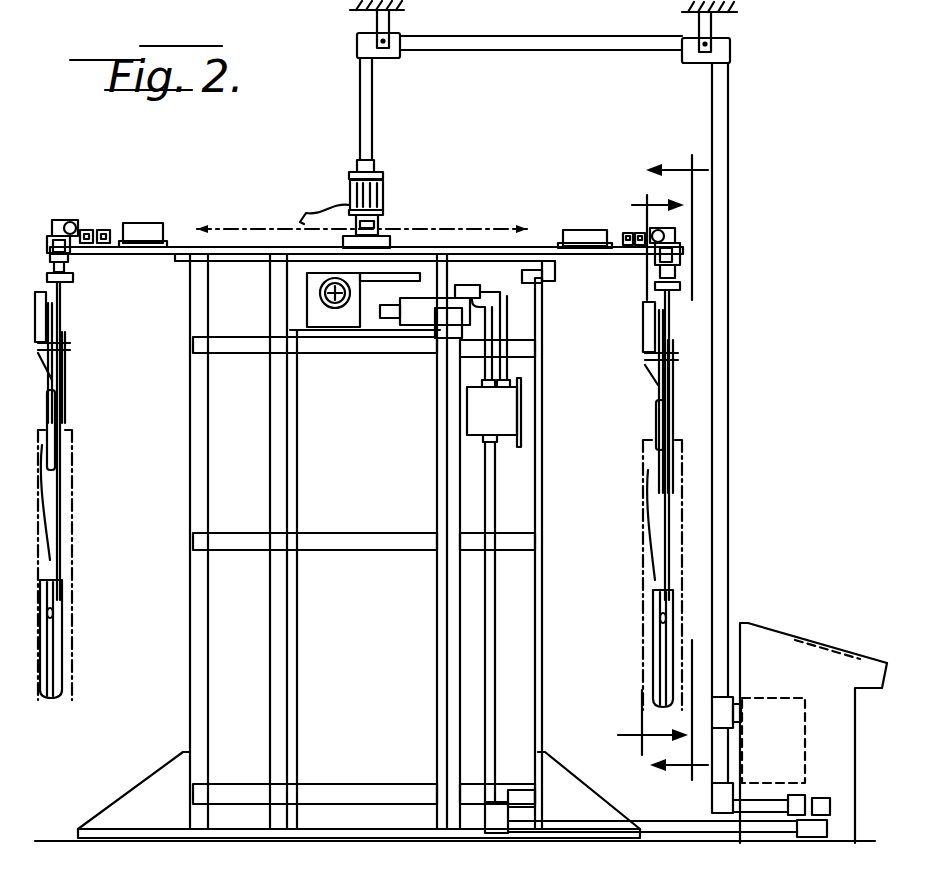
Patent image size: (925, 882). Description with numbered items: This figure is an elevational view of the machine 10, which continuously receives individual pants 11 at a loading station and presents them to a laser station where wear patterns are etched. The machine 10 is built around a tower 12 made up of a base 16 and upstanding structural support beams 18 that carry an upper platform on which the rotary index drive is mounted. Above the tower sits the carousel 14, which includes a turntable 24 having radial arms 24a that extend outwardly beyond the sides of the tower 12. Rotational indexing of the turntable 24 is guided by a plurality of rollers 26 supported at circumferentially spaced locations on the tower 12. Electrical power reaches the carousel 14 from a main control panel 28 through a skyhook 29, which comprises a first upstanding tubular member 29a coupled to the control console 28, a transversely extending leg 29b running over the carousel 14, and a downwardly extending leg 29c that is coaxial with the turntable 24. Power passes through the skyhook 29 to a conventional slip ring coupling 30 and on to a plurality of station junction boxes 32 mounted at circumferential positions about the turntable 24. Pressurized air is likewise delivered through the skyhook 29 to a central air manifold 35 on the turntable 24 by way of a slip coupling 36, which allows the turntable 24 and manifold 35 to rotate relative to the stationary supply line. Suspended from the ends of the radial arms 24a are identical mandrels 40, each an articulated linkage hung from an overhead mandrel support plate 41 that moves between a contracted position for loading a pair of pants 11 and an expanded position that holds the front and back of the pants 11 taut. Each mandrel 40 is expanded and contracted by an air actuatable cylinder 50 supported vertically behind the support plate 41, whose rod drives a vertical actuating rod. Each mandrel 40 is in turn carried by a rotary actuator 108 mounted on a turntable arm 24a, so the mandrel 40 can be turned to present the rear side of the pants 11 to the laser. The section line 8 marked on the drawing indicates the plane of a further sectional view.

The section line 8- 8 is at (677, 468).
The machine 10 is at (140, 123).
The pants 11 is at (78, 541).
The tower 12 is at (182, 664).
The carousel 14 is at (492, 244).
The base 16 is at (150, 786).
The upstanding structural support beams 18 is at (275, 470).
The turntable 24 is at (445, 246).
The radial arms 24a is at (218, 246).
The rollers 26 is at (180, 262).
The main control panel 28 is at (790, 641).
The skyhook 29 is at (730, 470).
The first upstanding tubular member 29a is at (730, 153).
The transversely extending leg 29b is at (494, 44).
The downwardly extending leg 29c is at (374, 112).
The slip ring coupling 30 is at (383, 195).
The station junction boxes 32 is at (146, 230).
The central air manifold 35 is at (283, 232).
The slip coupling 36 is at (380, 228).
The mandrel 40 is at (72, 414).
The mandrel support plate 41 is at (62, 300).
The air actuatable cylinder 50 is at (42, 322).
The rotary actuator 108 is at (62, 220).